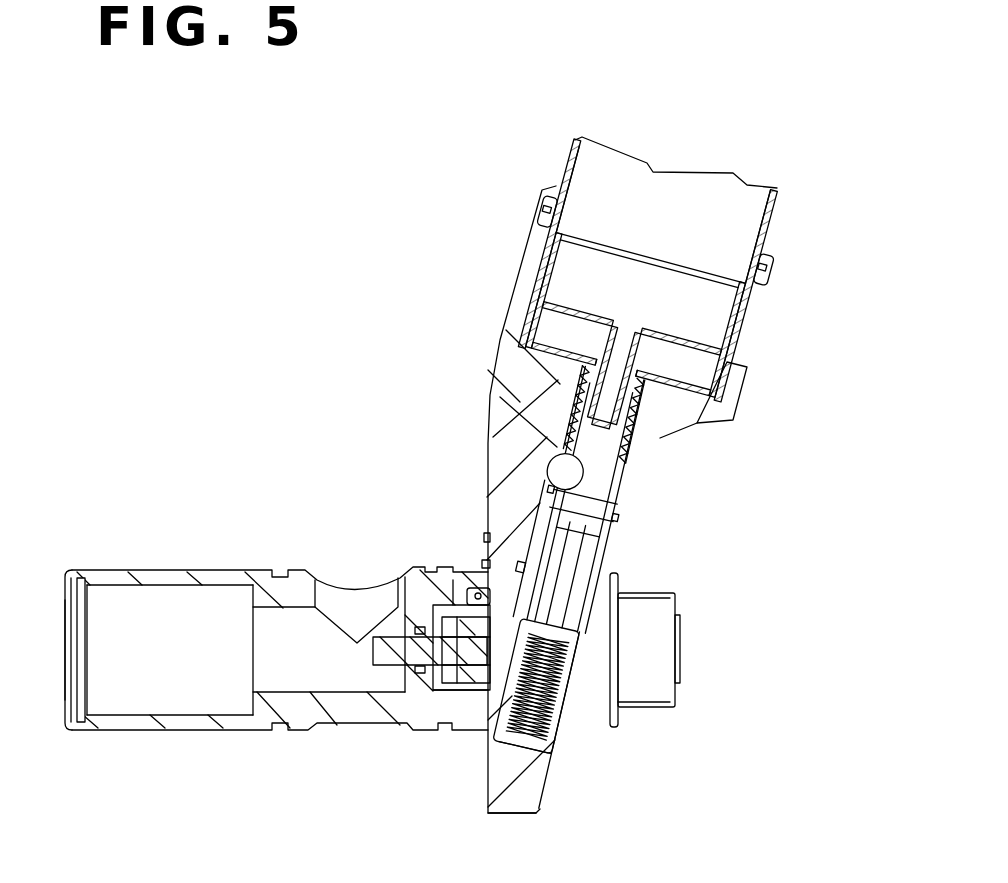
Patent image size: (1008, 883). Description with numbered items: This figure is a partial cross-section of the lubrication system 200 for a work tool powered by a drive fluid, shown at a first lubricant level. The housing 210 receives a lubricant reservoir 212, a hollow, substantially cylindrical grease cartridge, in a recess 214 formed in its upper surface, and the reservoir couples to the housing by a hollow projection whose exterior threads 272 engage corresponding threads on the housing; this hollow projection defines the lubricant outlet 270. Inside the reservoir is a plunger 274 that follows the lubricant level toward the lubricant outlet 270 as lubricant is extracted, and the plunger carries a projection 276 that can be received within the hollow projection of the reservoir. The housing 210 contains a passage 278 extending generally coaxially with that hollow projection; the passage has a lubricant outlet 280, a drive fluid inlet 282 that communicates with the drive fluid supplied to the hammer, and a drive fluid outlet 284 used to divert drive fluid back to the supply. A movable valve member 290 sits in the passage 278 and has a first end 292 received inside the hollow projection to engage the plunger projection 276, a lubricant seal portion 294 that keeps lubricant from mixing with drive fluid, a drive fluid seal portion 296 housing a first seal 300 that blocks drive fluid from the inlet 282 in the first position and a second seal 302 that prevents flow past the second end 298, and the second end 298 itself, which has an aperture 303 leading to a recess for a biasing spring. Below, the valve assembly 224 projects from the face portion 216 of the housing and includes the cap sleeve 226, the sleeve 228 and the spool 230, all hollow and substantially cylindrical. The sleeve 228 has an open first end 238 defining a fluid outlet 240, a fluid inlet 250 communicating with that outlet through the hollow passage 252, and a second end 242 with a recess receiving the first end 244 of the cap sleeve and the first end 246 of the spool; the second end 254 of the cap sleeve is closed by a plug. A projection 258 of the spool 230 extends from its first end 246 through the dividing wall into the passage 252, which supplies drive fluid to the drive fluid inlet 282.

The lubrication system 200 is at (395, 325).
The housing 210 is at (512, 388).
The lubricant reservoir 212 is at (762, 190).
The recess 214 is at (533, 250).
The face portion 216 is at (487, 812).
The valve assembly 224 is at (235, 790).
The cap sleeve 226 is at (662, 596).
The sleeve 228 is at (115, 575).
The spool 230 is at (470, 690).
The first end 238 is at (66, 758).
The fluid outlet 240 is at (103, 653).
The second end 242 is at (467, 550).
The first end 244 is at (457, 607).
The first end 246 is at (430, 695).
The fluid inlet 250 is at (338, 555).
The passage 252 is at (329, 635).
The second end 254 is at (373, 652).
The projection 258 is at (415, 675).
The lubricant outlet 270 is at (619, 464).
The threads 272 is at (637, 440).
The plunger 274 is at (745, 322).
The projection 276 is at (645, 428).
The passage 278 is at (593, 548).
The lubricant outlet 280 is at (547, 466).
The drive fluid inlet 282 is at (565, 620).
The drive fluid outlet 284 is at (485, 570).
The movable valve member 290 is at (640, 610).
The first end 292 is at (512, 360).
The lubricant seal portion 294 is at (563, 472).
The drive fluid seal portion 296 is at (638, 688).
The second end 298 is at (560, 700).
The first seal 300 is at (570, 645).
The second seal 302 is at (618, 716).
The aperture 303 is at (560, 730).